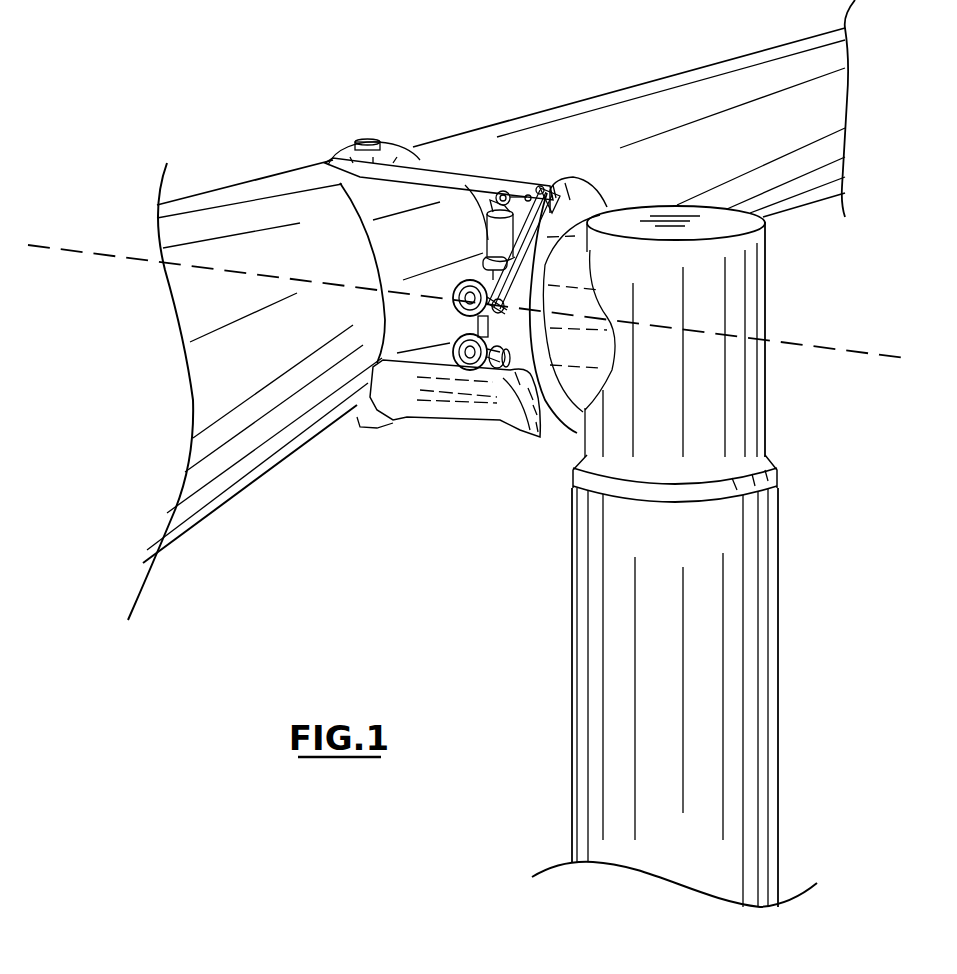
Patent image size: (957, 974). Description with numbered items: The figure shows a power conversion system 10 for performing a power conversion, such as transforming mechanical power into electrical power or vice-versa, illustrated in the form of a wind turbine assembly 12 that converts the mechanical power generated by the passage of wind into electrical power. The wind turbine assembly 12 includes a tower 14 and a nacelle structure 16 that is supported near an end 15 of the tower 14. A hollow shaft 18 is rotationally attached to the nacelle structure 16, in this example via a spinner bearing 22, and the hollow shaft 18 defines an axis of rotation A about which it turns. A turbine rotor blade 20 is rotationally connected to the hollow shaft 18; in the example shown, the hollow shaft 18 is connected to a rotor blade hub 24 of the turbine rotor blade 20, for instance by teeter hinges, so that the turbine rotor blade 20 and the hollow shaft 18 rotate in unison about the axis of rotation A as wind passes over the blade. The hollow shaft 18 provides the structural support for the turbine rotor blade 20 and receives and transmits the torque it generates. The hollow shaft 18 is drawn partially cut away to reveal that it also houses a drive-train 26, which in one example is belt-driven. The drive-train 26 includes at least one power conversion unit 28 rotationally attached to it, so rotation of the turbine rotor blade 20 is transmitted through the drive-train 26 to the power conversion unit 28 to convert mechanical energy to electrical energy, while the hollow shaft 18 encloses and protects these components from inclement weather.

The power conversion system 10 is at (302, 62).
The wind turbine assembly 12 is at (528, 127).
The tower 14 is at (602, 529).
The end 15 is at (768, 253).
The nacelle structure 16 is at (747, 365).
The hollow shaft 18 is at (483, 170).
The turbine rotor blade 20 is at (262, 200).
The spinner bearing 22 is at (553, 278).
The rotor blade hub 24 is at (345, 190).
The drive-train 26 is at (487, 276).
The power conversion unit 28 is at (497, 238).
The axis of rotation A is at (66, 251).